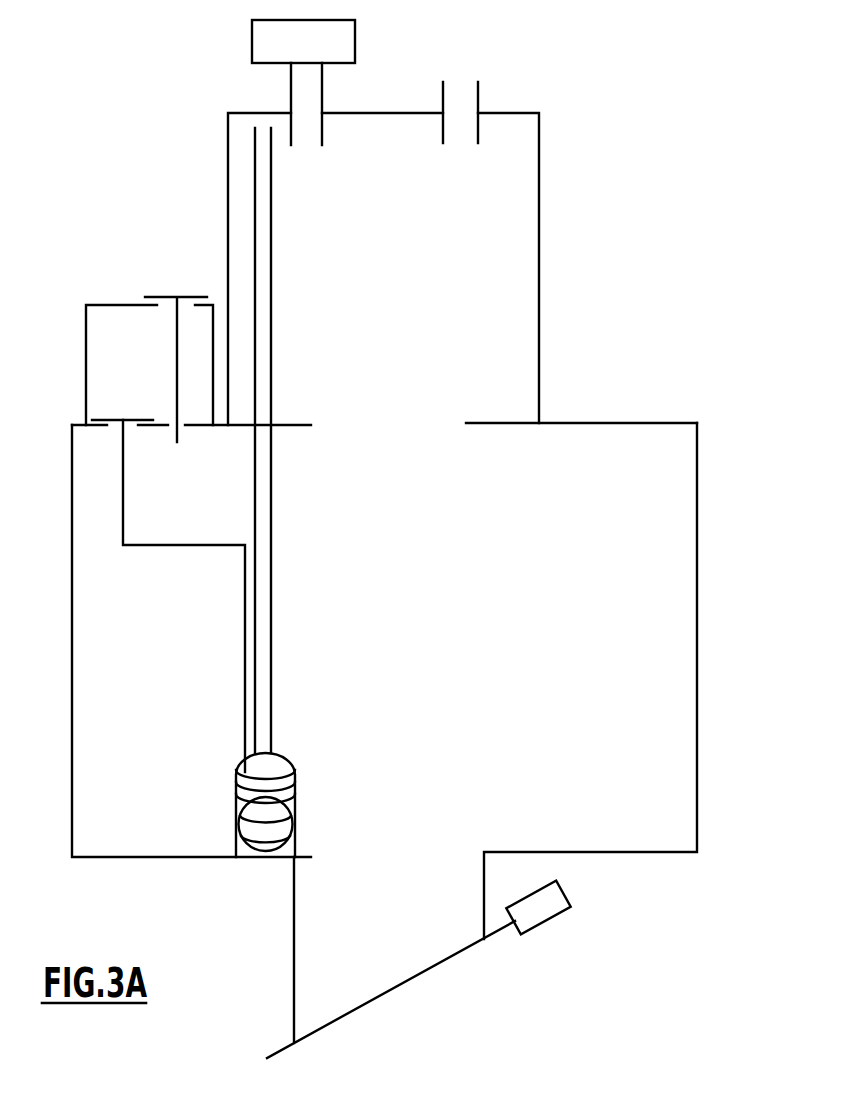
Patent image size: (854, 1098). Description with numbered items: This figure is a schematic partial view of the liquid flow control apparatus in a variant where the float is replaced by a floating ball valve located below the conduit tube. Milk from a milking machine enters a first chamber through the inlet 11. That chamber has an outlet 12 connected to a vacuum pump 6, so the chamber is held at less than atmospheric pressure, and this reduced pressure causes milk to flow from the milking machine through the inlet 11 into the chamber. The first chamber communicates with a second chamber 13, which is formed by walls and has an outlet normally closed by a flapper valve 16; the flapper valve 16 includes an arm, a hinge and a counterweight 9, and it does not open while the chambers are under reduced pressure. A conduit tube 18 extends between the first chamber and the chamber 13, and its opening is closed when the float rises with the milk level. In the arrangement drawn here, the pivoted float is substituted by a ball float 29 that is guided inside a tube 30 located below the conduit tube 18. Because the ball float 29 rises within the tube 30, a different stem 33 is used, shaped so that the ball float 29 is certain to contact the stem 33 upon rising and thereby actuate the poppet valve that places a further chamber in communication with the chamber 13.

The vacuum pump 6 is at (344, 65).
The outlet 12 is at (291, 97).
The inlet 11 is at (477, 93).
The chamber 13 is at (673, 643).
The stem 33 is at (183, 548).
The conduit tube 18 is at (272, 656).
The tube 30 is at (278, 772).
The ball float 29 is at (280, 823).
The counterweight 9 is at (547, 909).
The flapper valve 16 is at (444, 1027).